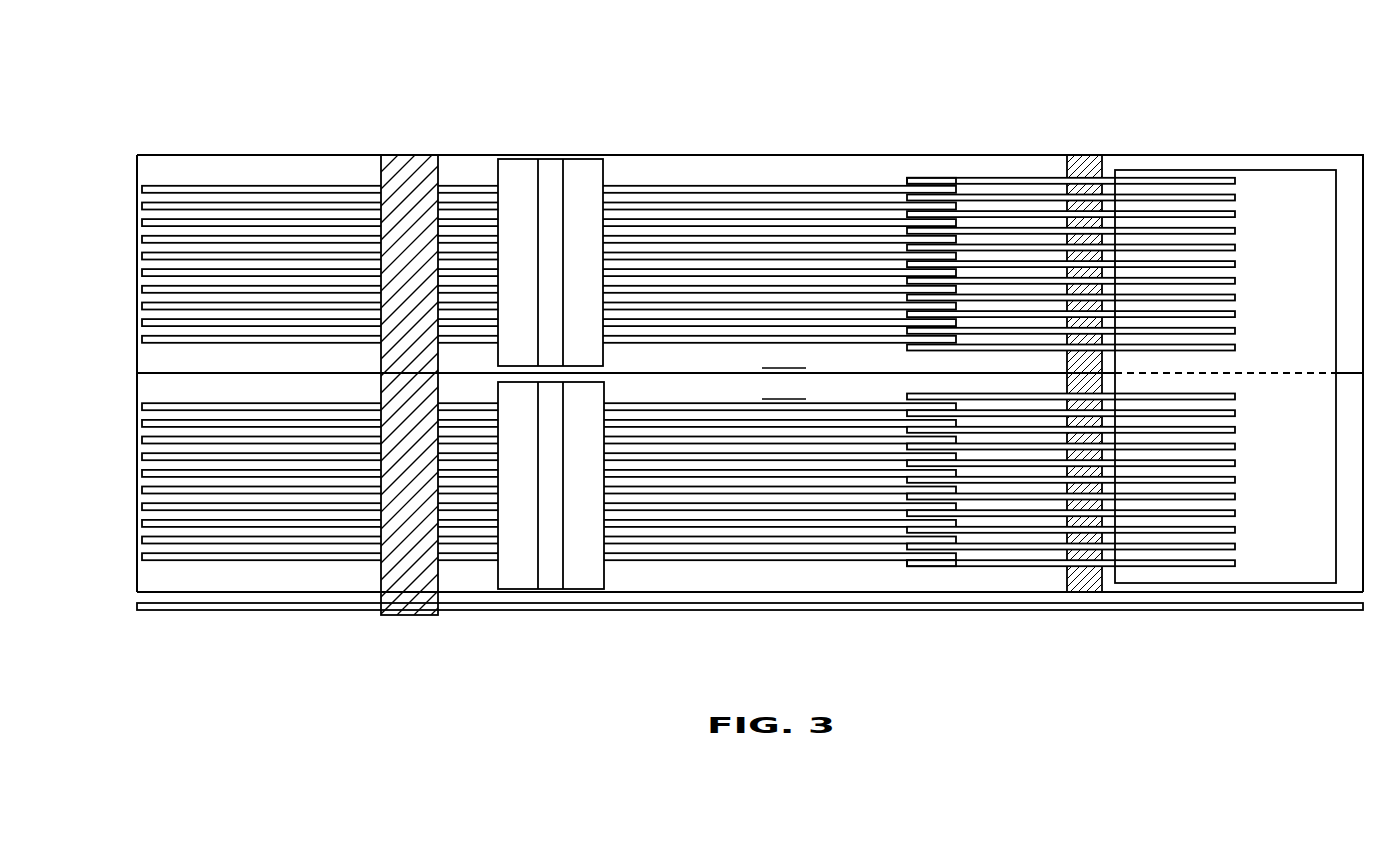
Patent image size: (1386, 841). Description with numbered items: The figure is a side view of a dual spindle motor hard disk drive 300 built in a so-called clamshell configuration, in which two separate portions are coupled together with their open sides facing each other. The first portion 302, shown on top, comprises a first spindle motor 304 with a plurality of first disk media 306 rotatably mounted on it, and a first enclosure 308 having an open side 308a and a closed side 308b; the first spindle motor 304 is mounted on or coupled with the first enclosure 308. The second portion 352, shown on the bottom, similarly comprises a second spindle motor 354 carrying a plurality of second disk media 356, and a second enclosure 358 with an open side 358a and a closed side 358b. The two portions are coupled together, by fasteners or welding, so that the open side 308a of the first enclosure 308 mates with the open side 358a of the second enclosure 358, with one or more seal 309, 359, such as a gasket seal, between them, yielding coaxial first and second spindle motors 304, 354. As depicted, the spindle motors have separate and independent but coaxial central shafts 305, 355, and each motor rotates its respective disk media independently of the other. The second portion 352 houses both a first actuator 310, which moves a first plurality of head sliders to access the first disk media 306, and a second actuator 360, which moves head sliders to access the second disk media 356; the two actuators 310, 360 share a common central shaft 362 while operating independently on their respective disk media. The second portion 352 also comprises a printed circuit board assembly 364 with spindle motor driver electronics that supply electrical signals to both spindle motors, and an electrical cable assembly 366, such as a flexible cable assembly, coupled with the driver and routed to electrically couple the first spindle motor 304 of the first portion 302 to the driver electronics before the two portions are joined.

The dual spindle motor hard disk drive 300 is at (168, 80).
The first portion 302 is at (286, 145).
The first spindle motor 304 is at (582, 172).
The central shaft 305 is at (552, 170).
The first disk media 306 is at (128, 186).
The first enclosure 308 is at (860, 153).
The open side 308a is at (784, 357).
The closed side 308b is at (730, 153).
The seal 309 is at (132, 373).
The first actuator 310 is at (1262, 168).
The second portion 352 is at (287, 617).
The second spindle motor 354 is at (583, 580).
The central shaft 355 is at (552, 580).
The second disk media 356 is at (128, 401).
The second enclosure 358 is at (1008, 593).
The open side 358a is at (784, 388).
The closed side 358b is at (822, 593).
The seal 359 is at (132, 373).
The second actuator 360 is at (1293, 593).
The common central shaft 362 is at (1087, 593).
The printed circuit board assembly 364 is at (172, 607).
The electrical cable assembly 366 is at (403, 615).